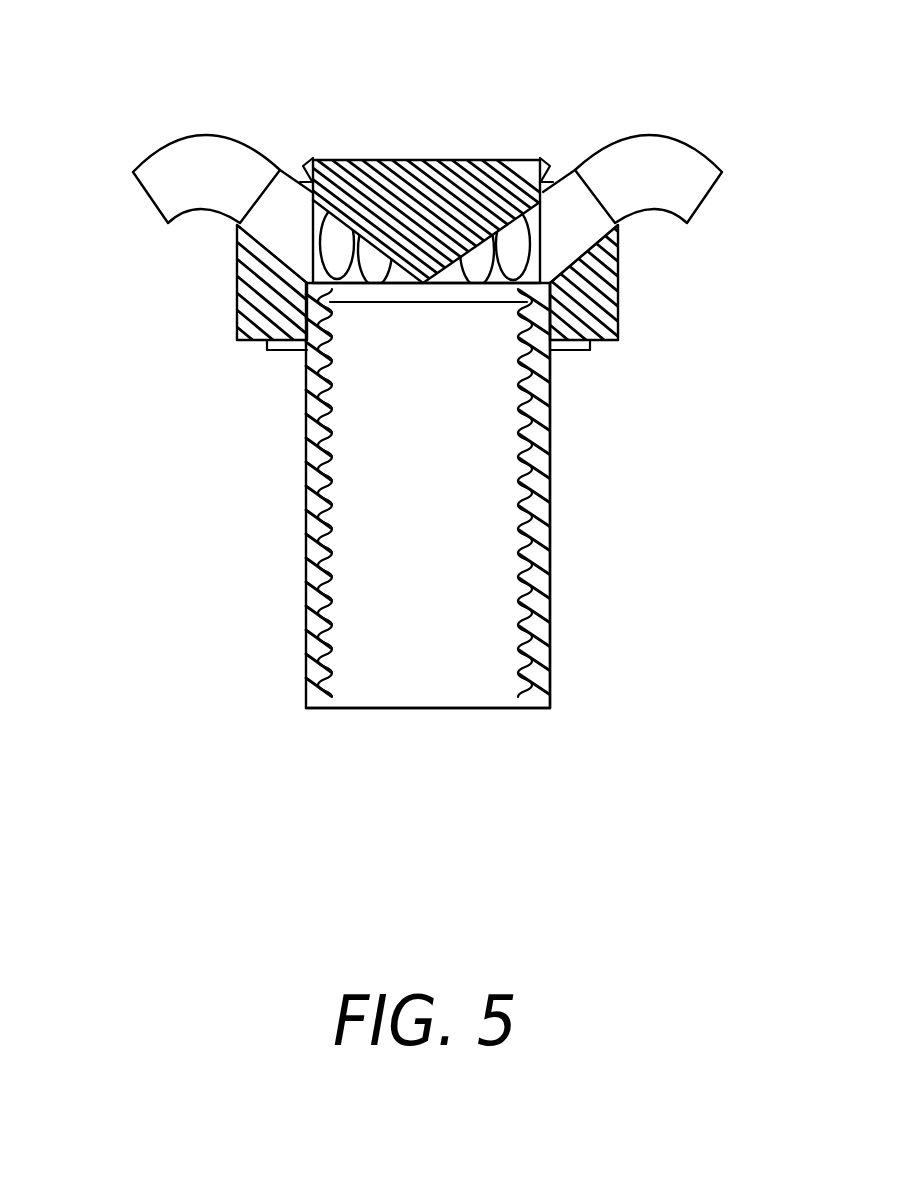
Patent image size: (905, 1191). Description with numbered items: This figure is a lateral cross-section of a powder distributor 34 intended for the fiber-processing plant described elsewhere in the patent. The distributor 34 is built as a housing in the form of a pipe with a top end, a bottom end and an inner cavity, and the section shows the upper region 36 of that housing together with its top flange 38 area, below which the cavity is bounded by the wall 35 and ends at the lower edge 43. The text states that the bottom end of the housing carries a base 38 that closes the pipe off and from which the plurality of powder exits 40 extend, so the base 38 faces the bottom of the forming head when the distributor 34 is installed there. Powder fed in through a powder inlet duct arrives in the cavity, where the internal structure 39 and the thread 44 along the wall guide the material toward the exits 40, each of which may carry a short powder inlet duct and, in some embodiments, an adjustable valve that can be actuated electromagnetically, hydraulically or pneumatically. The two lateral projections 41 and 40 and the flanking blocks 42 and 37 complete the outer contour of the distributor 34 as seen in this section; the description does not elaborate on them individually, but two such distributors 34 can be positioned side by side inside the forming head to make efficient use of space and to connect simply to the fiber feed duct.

The powder distributor 34 is at (283, 509).
The threaded sleeve outer wall 35 is at (550, 618).
The nut head 36 is at (548, 167).
The right hinge block 37 is at (615, 308).
The base 38 is at (412, 160).
The spring insert 39 is at (408, 272).
The powder exit 40 is at (672, 163).
The left wing 41 is at (183, 168).
The left hinge block 42 is at (285, 235).
The bottom end of sleeve 43 is at (413, 708).
The internal thread 44 is at (517, 420).